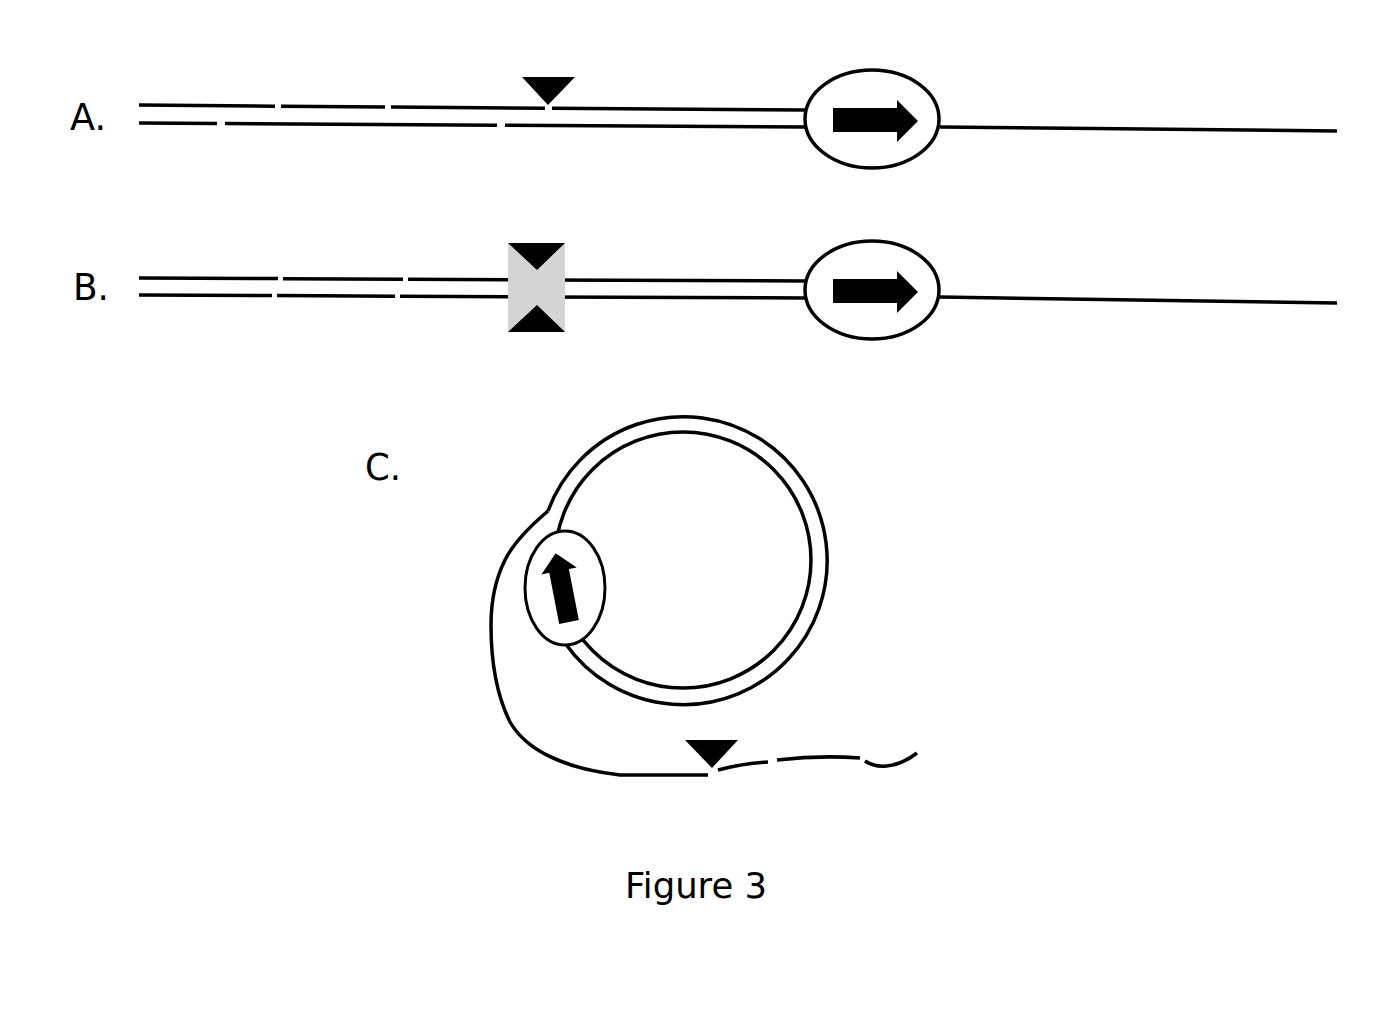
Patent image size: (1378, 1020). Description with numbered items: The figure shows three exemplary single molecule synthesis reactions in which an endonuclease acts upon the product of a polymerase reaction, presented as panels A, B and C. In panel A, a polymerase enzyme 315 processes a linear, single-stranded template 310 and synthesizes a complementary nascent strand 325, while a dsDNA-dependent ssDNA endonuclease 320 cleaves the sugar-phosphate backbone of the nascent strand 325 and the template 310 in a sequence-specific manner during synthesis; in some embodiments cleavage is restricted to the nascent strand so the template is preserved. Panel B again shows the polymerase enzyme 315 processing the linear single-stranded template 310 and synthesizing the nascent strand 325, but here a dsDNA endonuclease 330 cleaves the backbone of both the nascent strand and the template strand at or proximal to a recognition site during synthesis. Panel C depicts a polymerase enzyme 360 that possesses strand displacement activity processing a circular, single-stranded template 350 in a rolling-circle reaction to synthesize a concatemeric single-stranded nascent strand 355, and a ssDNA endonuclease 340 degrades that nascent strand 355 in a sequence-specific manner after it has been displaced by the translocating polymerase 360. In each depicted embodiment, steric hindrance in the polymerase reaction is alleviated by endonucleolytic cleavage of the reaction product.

The linear single-stranded template 310 is at (1258, 129).
The polymerase enzyme 315 is at (830, 93).
The dsDNA-dependent ssDNA endonuclease 320 is at (522, 80).
The complementary nascent strand 325 is at (634, 107).
The dsDNA endonuclease 330 is at (512, 252).
The ssDNA endonuclease 340 is at (732, 751).
The circular single-stranded template 350 is at (668, 687).
The concatemeric single-stranded nascent strand 355 is at (493, 660).
The polymerase enzyme with strand displacement activity 360 is at (593, 578).